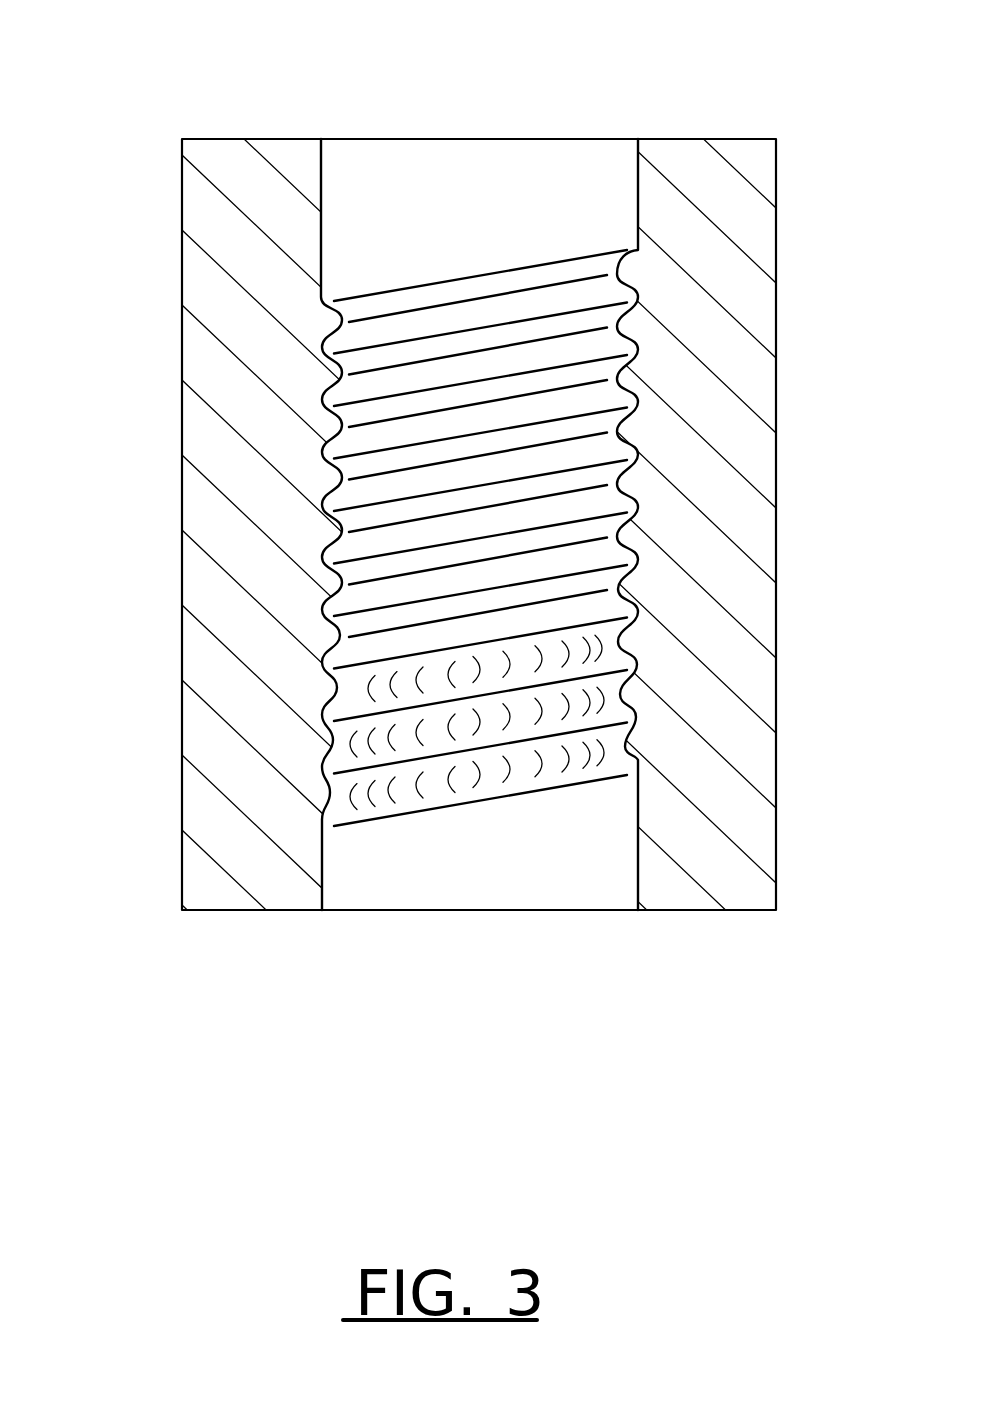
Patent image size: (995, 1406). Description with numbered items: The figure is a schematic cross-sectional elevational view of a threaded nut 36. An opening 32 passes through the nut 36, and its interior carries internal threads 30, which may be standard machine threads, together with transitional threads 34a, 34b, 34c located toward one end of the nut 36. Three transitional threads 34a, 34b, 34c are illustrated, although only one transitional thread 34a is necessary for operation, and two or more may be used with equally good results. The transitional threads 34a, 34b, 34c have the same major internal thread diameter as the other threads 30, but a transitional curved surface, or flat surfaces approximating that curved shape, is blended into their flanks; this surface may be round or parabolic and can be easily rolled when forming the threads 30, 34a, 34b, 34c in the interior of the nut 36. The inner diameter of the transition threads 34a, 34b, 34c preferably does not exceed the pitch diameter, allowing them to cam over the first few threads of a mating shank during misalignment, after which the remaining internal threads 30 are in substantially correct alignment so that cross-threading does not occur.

The internal threads 30 is at (338, 428).
The opening 32 is at (524, 196).
The transitional thread 34a is at (328, 807).
The transitional thread 34b is at (333, 747).
The transitional thread 34c is at (333, 693).
The nut 36 is at (777, 187).